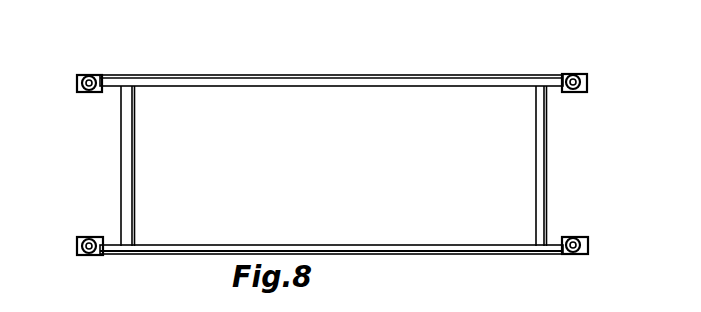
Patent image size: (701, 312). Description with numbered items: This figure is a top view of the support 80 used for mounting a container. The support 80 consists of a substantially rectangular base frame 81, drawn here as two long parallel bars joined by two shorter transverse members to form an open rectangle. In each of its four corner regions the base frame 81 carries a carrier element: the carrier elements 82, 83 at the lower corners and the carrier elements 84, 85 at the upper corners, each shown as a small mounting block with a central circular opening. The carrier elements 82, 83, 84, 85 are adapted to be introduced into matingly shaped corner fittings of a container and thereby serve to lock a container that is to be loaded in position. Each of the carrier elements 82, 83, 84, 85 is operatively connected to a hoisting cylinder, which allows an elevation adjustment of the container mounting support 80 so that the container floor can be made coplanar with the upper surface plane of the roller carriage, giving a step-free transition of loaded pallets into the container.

The support 80 is at (188, 66).
The base frame 81 is at (346, 75).
The carrier element 82 is at (88, 255).
The carrier element 83 is at (578, 255).
The carrier element 84 is at (573, 74).
The carrier element 85 is at (89, 75).